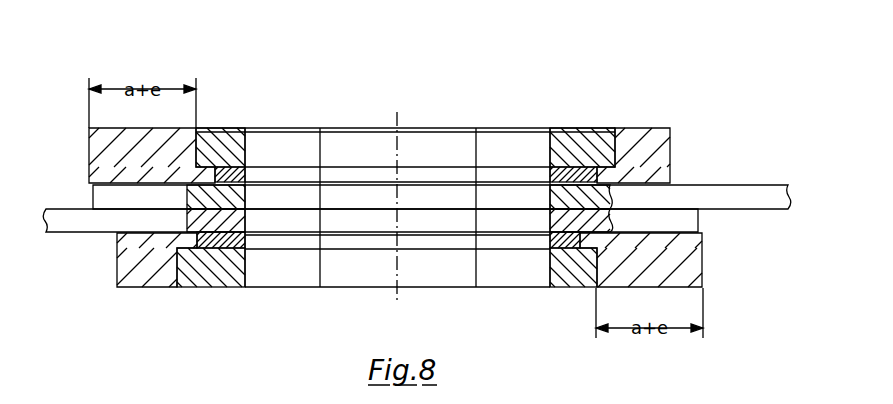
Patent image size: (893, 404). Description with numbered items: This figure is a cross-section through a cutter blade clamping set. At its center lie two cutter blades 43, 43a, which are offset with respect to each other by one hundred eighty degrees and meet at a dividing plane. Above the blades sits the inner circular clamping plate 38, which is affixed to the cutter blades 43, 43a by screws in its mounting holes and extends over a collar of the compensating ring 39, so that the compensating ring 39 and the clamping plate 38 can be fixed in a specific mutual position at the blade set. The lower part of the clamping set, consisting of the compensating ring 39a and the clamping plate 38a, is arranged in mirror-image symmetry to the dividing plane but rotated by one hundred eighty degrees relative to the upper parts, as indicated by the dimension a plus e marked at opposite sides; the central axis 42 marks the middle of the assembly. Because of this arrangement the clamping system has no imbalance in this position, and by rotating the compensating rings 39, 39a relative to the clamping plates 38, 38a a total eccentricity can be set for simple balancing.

The inner circular clamping plate 38 is at (228, 140).
The clamping plate 38a is at (223, 278).
The compensating ring 39 is at (645, 142).
The compensating ring 39a is at (687, 263).
The center line of joint 42 is at (378, 123).
The cutter blade 43 is at (733, 184).
The cutter blade 43a is at (83, 221).